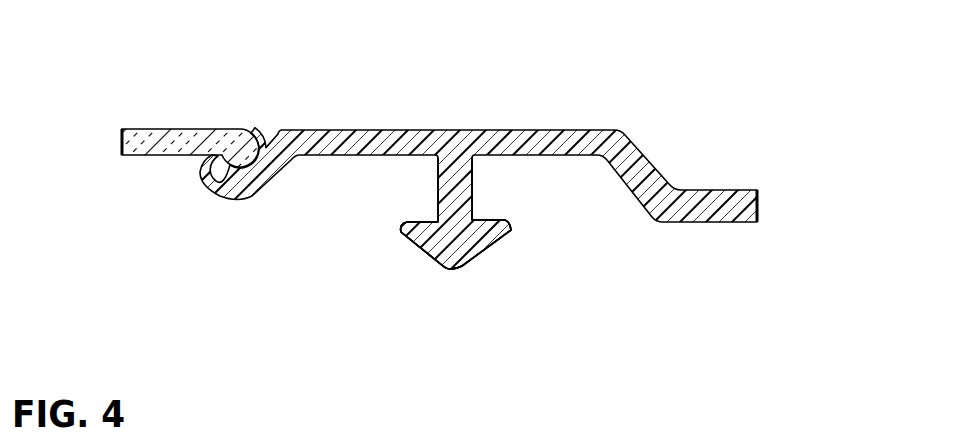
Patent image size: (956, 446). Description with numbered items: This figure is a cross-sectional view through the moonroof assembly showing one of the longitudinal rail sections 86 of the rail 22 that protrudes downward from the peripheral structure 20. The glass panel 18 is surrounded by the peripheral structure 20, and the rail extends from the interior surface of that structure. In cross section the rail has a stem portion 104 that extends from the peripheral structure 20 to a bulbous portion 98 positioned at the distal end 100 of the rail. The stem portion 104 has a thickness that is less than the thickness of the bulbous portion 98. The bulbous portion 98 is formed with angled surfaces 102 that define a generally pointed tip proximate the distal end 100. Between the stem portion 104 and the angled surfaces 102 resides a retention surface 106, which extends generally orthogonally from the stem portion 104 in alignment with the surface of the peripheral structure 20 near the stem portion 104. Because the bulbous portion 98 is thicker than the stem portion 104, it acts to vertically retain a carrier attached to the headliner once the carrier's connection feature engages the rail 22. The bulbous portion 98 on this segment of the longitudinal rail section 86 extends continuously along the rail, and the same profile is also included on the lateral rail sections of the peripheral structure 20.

The glass panel 18 is at (161, 120).
The structure 20 is at (550, 122).
The rail 22 is at (507, 233).
The longitudinal rail section 86 is at (518, 265).
The bulbous portion 98 is at (426, 253).
The distal end 100 is at (406, 249).
The angled surfaces 102 is at (483, 258).
The stem portion 104 is at (473, 178).
The retention surface 106 is at (425, 218).